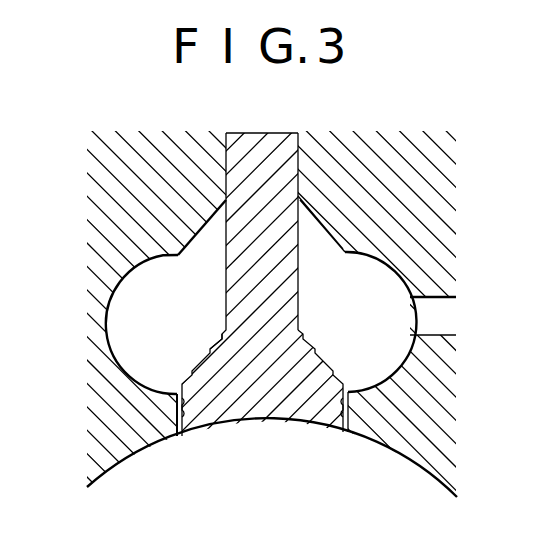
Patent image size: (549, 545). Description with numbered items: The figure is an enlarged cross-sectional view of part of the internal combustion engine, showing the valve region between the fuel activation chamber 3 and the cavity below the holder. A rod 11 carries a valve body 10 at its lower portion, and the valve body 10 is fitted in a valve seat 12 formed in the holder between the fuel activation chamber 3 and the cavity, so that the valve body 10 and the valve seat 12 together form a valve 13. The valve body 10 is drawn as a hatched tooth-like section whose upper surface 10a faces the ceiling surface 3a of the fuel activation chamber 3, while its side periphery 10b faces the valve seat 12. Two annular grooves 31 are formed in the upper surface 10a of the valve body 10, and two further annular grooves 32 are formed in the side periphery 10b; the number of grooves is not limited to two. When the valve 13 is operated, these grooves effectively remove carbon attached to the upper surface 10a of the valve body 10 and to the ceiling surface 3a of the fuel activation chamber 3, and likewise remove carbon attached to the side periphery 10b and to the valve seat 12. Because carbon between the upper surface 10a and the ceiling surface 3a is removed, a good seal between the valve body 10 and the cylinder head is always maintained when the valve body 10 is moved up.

The fuel activation chamber 3 is at (125, 290).
The ceiling surface 3a is at (213, 228).
The valve body 10 is at (238, 402).
The upper surface 10a is at (318, 354).
The side periphery 10b is at (348, 405).
The rod 11 is at (240, 157).
The valve seat 12 is at (339, 392).
The valve 13 is at (195, 437).
The annular grooves 31 is at (220, 345).
The annular grooves 32 is at (178, 398).